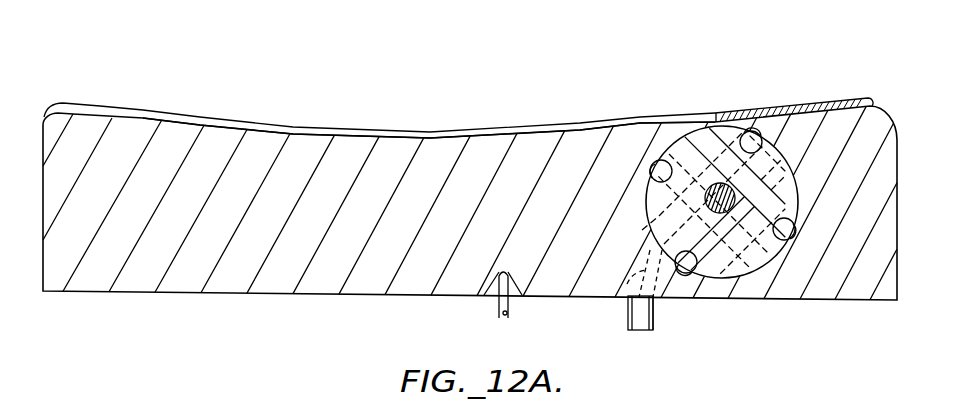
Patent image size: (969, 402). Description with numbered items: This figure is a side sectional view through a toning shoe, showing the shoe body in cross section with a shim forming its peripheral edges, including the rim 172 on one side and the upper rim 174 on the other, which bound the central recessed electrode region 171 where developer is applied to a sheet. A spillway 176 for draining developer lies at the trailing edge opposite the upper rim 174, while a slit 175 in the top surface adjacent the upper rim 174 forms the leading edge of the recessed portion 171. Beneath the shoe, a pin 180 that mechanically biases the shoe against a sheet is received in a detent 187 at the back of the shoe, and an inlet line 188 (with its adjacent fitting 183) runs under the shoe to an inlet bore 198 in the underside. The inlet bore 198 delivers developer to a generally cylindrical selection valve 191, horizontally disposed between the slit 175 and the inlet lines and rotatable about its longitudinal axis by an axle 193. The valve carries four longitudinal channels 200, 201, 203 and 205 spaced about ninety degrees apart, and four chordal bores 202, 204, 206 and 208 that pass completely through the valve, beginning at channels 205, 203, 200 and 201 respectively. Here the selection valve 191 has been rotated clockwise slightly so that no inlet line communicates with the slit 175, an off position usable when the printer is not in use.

The central recessed electrode region 171 is at (431, 137).
The rim 172 is at (349, 128).
The upper rim 174 is at (841, 97).
The slit 175 is at (717, 121).
The spillway 176 is at (43, 157).
The pin 180 is at (497, 308).
The bolt side 183 is at (655, 301).
The detent 187 is at (515, 294).
The inlet line 188 is at (628, 320).
The selection valve 191 is at (648, 191).
The axle 193 is at (705, 186).
The inlet bore 198 is at (626, 297).
The longitudinal channel 200 is at (792, 236).
The longitudinal channel 201 is at (760, 140).
The chordal bore 202 is at (782, 183).
The longitudinal channel 203 is at (660, 174).
The chordal bore 204 is at (745, 282).
The longitudinal channel 205 is at (688, 272).
The chordal bore 206 is at (700, 152).
The chordal bore 208 is at (640, 228).